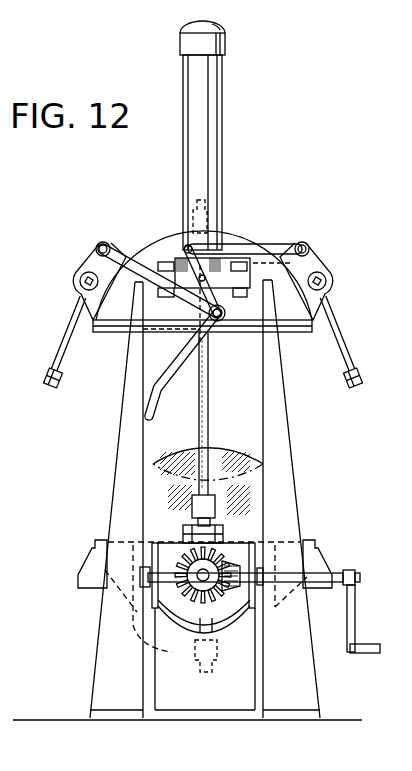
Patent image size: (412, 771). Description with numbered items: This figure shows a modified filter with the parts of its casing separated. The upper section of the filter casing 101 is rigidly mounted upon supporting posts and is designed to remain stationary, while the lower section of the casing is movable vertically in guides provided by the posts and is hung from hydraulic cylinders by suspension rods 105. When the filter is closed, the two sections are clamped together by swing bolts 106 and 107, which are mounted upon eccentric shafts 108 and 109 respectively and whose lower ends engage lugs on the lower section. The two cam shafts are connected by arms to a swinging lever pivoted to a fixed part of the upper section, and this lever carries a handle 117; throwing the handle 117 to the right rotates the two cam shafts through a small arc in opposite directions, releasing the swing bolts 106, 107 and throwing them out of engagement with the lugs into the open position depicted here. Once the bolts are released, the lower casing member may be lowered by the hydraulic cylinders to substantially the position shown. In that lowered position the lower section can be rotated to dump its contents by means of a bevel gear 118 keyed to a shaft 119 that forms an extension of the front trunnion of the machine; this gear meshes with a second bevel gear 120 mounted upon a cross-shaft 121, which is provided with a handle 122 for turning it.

The upper section of the filter casing 101 is at (167, 237).
The rods 105 is at (208, 386).
The swing bolt 106 is at (340, 331).
The swing bolt 107 is at (67, 331).
The eccentric shaft 108 is at (318, 273).
The eccentric shaft 109 is at (80, 281).
The handle 117 is at (160, 381).
The bevel gear 118 is at (218, 613).
The shaft 119 is at (180, 550).
The second bevel gear 120 is at (233, 565).
The cross-shaft 121 is at (330, 573).
The handle 122 is at (355, 628).